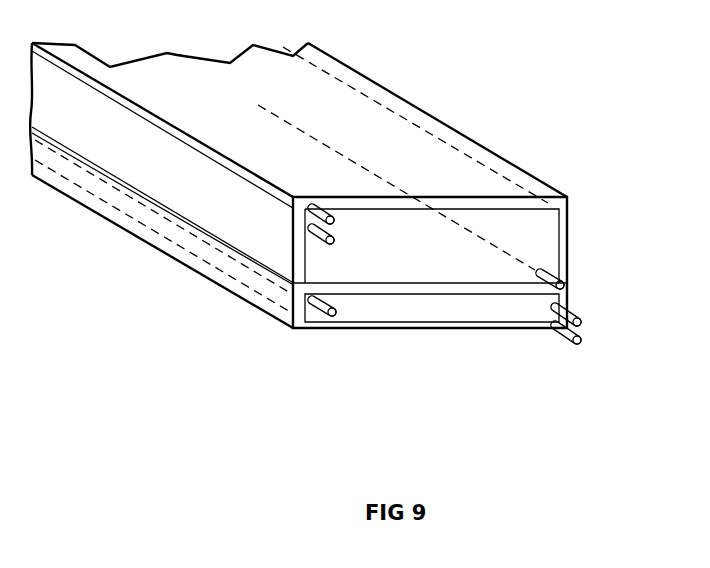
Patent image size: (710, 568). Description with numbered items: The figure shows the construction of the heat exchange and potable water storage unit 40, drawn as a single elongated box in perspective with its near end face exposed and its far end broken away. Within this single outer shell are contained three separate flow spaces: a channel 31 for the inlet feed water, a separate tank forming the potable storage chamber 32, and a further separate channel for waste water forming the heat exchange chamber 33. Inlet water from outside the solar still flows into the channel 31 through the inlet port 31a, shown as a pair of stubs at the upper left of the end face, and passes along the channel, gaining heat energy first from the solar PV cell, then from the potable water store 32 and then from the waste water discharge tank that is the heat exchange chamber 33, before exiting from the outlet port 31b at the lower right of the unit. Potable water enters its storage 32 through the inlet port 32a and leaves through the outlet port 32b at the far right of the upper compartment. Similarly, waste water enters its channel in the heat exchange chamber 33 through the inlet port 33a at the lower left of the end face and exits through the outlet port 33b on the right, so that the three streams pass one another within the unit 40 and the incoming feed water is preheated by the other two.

The heat exchange and potable water storage unit 40 is at (568, 133).
The channel 31 is at (570, 237).
The potable storage chamber 32 is at (477, 275).
The heat exchange chamber 33 is at (422, 318).
The inlet port 31a is at (291, 207).
The outlet port 31b is at (586, 339).
The inlet port 32a is at (310, 245).
The outlet port 32b is at (573, 279).
The inlet port 33a is at (321, 319).
The outlet port 33b is at (594, 323).